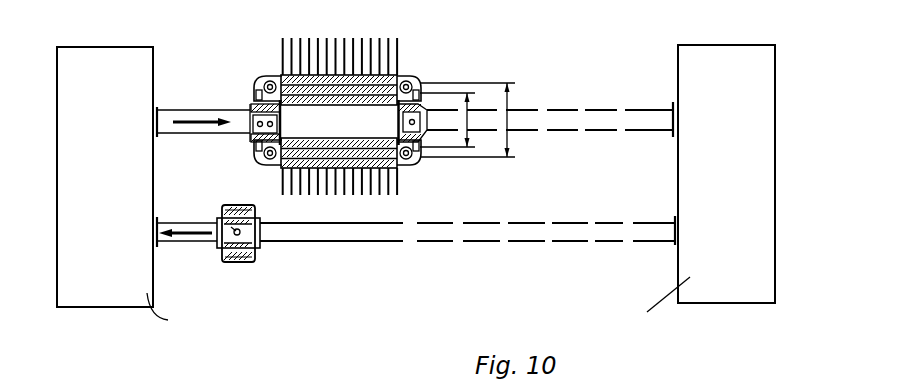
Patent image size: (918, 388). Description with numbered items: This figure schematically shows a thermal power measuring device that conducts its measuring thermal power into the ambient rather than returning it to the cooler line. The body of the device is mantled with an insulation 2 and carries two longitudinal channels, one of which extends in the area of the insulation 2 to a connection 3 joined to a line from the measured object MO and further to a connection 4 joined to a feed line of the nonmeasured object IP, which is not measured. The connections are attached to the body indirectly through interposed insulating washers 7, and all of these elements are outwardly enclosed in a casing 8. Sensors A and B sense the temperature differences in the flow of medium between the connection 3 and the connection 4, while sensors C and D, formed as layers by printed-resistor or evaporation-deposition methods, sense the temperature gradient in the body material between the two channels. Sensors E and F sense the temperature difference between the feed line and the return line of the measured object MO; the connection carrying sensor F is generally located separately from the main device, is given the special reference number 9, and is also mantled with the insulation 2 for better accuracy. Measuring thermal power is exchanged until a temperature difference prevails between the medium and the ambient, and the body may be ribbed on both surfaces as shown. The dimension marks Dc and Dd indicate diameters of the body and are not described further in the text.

The insulation 2 is at (262, 84).
The connection 3 is at (262, 152).
The connection 4 is at (420, 143).
The insulating washers 7 is at (273, 75).
The casing 8 is at (265, 78).
The connection with sensor F 9 is at (232, 262).
The sensor A is at (249, 109).
The sensor B is at (418, 147).
The sensor C is at (373, 168).
The sensor D is at (310, 168).
The sensor E is at (252, 134).
The sensor F is at (222, 217).
The core diameter Dc is at (467, 100).
The outer diameter Dd is at (507, 106).
The measured object MO is at (113, 282).
The nonmeasured object IP is at (733, 280).